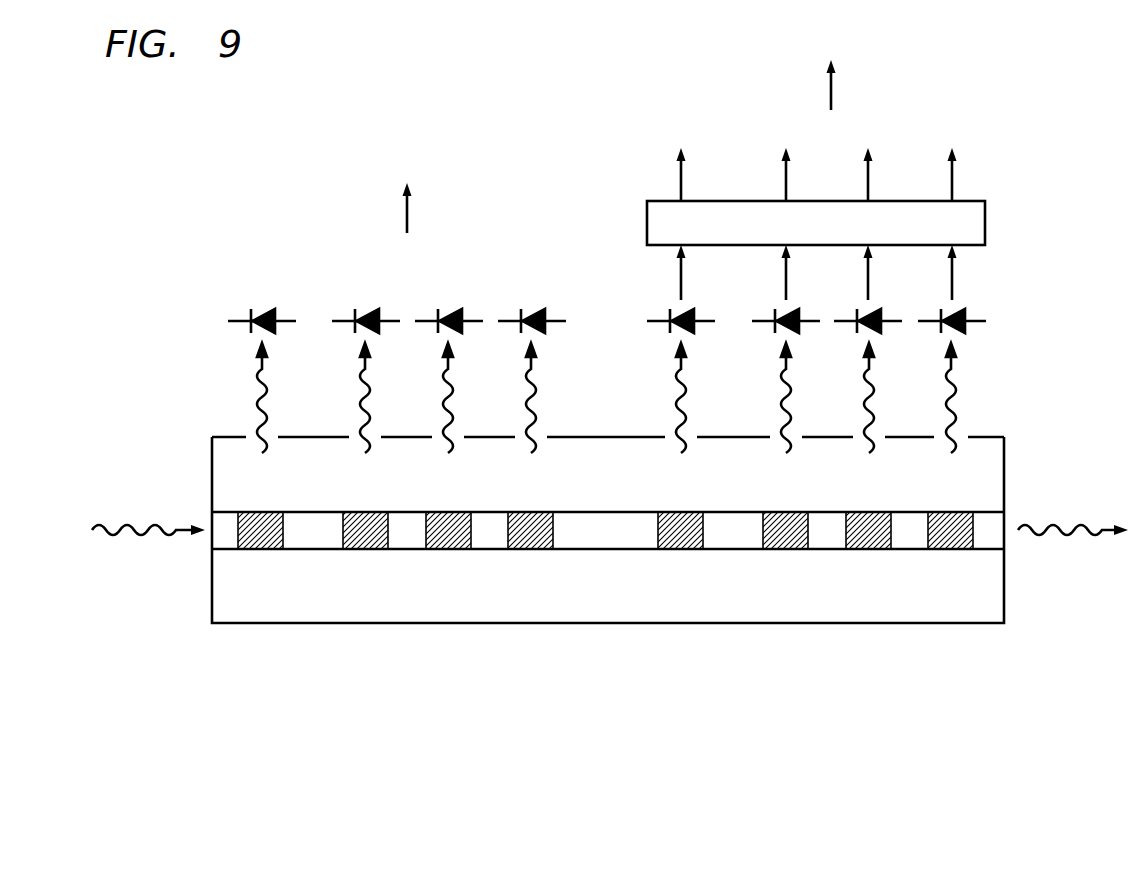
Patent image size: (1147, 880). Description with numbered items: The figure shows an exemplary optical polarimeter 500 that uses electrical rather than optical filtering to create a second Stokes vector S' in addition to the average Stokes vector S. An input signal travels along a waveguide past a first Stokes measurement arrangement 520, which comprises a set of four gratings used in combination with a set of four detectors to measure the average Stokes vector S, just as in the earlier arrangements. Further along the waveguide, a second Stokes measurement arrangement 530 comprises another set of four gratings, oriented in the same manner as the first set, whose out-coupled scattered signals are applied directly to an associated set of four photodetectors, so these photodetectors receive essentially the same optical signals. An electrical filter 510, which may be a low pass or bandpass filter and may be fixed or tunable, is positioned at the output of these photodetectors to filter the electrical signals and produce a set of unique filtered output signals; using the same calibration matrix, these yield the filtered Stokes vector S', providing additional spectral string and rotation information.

The optical polarimeter 500 is at (227, 153).
The electrical filter 510 is at (986, 224).
The first Stokes measurement arrangement 520 is at (396, 605).
The second Stokes measurement arrangement 530 is at (816, 605).